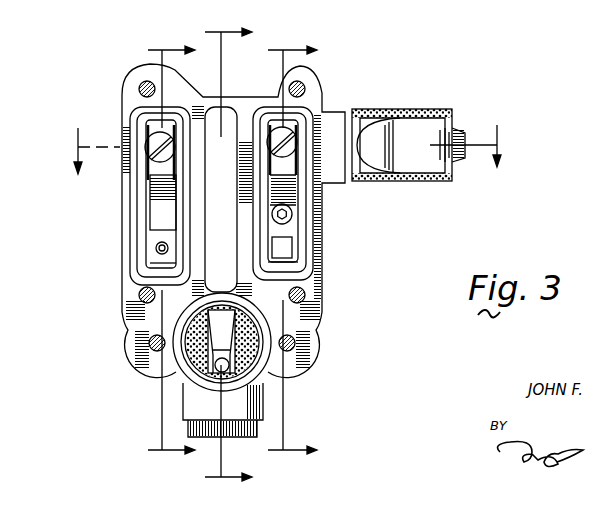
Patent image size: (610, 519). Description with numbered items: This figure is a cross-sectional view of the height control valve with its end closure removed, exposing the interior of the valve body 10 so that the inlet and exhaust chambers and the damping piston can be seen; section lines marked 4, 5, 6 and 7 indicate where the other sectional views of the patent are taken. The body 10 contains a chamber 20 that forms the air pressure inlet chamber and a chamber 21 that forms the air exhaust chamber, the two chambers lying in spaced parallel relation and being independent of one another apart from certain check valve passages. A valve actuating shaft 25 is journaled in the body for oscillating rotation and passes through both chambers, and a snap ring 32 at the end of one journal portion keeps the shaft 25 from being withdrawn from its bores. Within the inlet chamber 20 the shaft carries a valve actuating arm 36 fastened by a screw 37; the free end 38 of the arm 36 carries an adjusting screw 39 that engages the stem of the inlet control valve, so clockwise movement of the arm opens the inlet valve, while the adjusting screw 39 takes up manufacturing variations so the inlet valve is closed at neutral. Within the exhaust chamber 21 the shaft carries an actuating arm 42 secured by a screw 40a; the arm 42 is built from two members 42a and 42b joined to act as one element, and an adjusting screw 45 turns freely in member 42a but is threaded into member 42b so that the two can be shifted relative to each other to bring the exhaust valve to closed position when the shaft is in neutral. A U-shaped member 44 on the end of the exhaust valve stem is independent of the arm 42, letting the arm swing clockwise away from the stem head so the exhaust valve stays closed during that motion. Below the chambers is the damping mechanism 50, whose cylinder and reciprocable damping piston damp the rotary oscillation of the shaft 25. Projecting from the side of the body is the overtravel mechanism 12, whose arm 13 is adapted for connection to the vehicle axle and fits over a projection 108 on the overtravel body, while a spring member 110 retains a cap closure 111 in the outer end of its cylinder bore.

The valve body 10 is at (318, 305).
The overtravel mechanism 12 is at (420, 108).
The arm 13 is at (445, 107).
The projection 108 is at (468, 133).
The spring member 110 is at (430, 165).
The cap closure 111 is at (383, 108).
The chamber 20 is at (152, 122).
The valve actuating shaft 25 is at (147, 147).
The screw 37 is at (142, 150).
The valve actuating arm 36 is at (150, 192).
The adjusting screw 39 is at (155, 248).
The free end 38 is at (153, 262).
The snap ring 32 is at (178, 176).
The chamber 21 is at (293, 122).
The actuating arm 42 is at (293, 183).
The screw 40a is at (278, 137).
The member 42a is at (292, 203).
The adjusting screw 45 is at (288, 220).
The U-shaped member 44 is at (287, 247).
The member 42b is at (292, 260).
The damping mechanism 50 is at (240, 358).
The section line 4- 4 is at (283, 149).
The section line 5- 5 is at (156, 247).
The section line 6- 6 is at (303, 247).
The section line 7- 7 is at (237, 244).